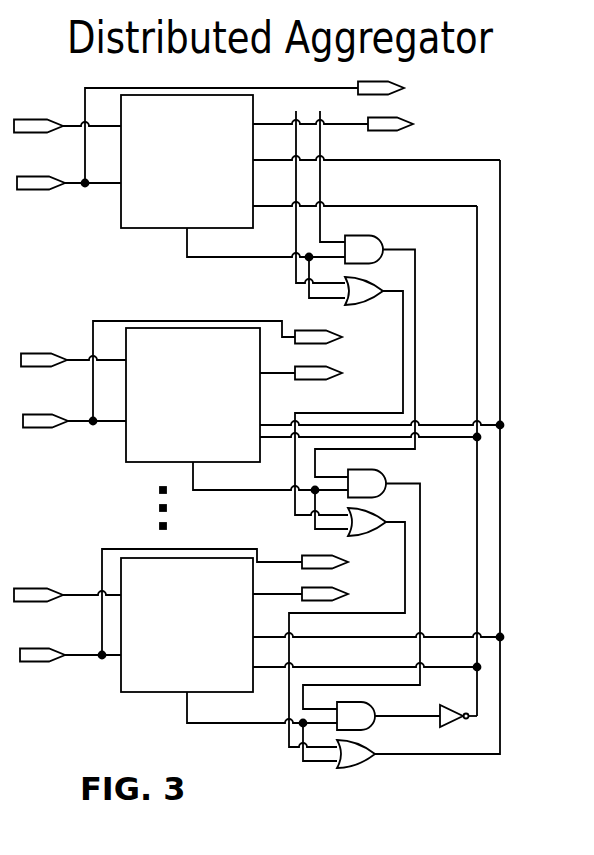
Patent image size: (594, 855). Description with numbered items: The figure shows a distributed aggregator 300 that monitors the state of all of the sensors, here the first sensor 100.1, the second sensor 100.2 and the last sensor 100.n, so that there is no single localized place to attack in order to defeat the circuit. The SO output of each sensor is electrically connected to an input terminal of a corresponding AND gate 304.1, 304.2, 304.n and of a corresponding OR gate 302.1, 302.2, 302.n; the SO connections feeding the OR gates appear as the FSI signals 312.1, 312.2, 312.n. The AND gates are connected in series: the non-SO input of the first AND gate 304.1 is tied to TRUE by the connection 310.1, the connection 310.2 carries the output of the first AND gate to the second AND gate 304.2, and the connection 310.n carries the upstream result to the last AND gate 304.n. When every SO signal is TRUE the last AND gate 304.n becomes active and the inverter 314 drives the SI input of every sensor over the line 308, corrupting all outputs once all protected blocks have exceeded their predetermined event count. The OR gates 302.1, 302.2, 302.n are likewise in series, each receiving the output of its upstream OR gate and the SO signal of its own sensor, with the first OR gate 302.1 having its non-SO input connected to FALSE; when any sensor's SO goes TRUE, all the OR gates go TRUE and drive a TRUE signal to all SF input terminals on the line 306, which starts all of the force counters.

The distributed aggregator 300 is at (528, 108).
The sensor 100.1 is at (115, 207).
The sensor 100.2 is at (115, 448).
The sensor 100.n is at (115, 678).
The OR gate 302.1 is at (383, 282).
The OR gate 302.2 is at (400, 512).
The OR gate 302.n is at (376, 748).
The AND gate 304.1 is at (385, 236).
The AND gate 304.2 is at (395, 474).
The AND gate 304.n is at (376, 706).
The line 306 is at (503, 397).
The line 308 is at (481, 531).
The aggregated signal input line 1 310.1 is at (323, 174).
The aggregated signal input line 2 310.2 is at (420, 330).
The aggregated signal input line n 310.n is at (425, 605).
The FSI signal 312.1 is at (294, 264).
The FSI signal 312.2 is at (290, 496).
The FSI signal 312.n is at (285, 731).
The inverter 314 is at (458, 725).